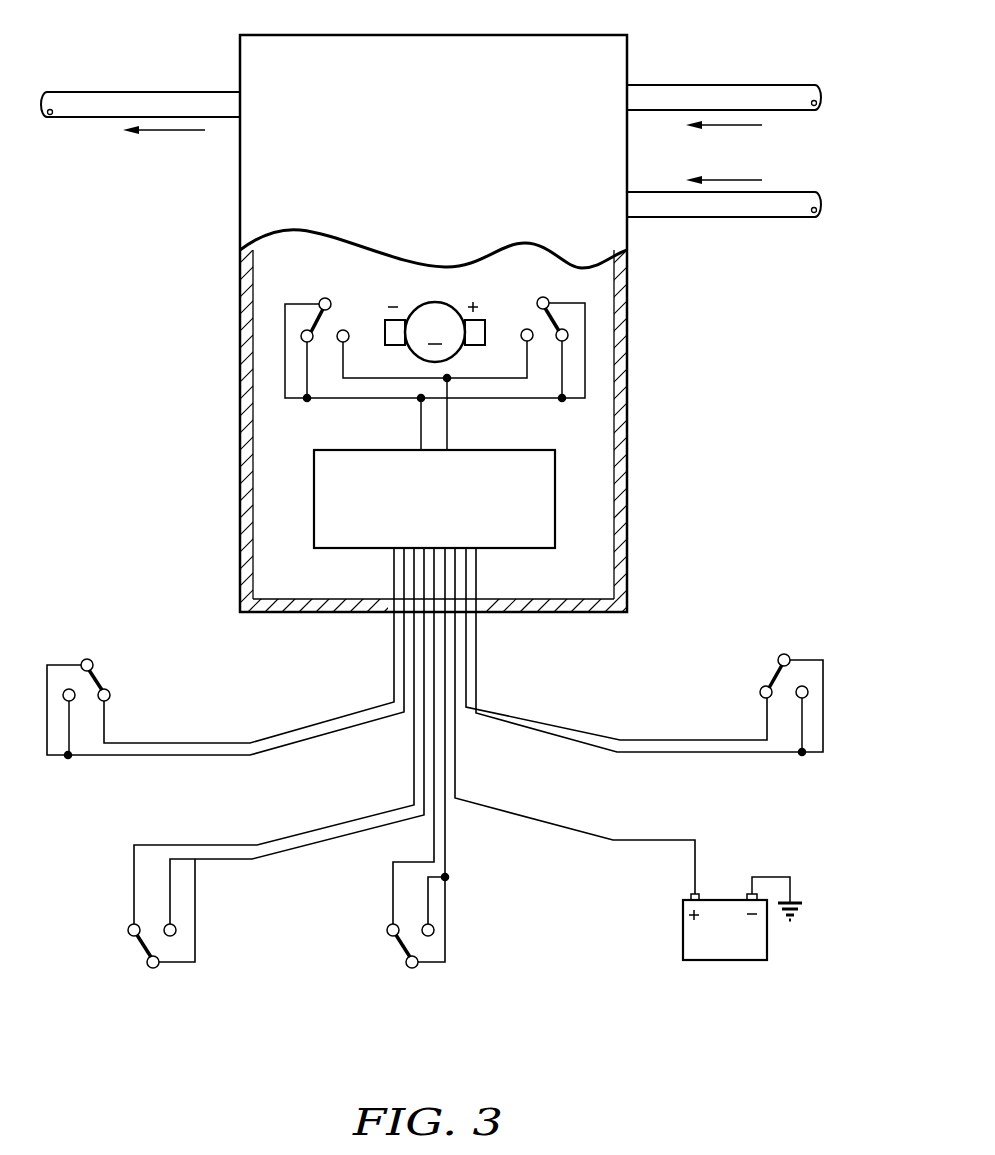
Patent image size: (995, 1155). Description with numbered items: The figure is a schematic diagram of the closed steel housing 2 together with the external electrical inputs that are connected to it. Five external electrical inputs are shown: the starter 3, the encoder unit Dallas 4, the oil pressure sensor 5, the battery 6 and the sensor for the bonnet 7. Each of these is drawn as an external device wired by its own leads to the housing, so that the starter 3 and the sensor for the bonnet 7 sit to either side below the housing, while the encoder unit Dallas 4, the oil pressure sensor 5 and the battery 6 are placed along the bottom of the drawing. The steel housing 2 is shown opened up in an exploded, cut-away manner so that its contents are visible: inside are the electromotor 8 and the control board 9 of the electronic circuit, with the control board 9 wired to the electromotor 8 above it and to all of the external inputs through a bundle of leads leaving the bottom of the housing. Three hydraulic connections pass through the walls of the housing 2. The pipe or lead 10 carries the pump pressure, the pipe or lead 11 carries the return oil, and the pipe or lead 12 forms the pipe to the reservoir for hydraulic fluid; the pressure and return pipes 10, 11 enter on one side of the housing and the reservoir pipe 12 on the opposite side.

The closed steel housing 2 is at (228, 212).
The starter 3 is at (130, 685).
The encoder unit Dallas 4 is at (211, 923).
The oil pressure sensor 5 is at (461, 924).
The battery 6 is at (685, 938).
The sensor for the bonnet 7 is at (740, 687).
The electromotor 8 is at (432, 301).
The control board 9 is at (553, 481).
The pipe or lead 10 is at (820, 196).
The pipe or lead 11 is at (798, 106).
The pipe or lead 12 is at (78, 116).